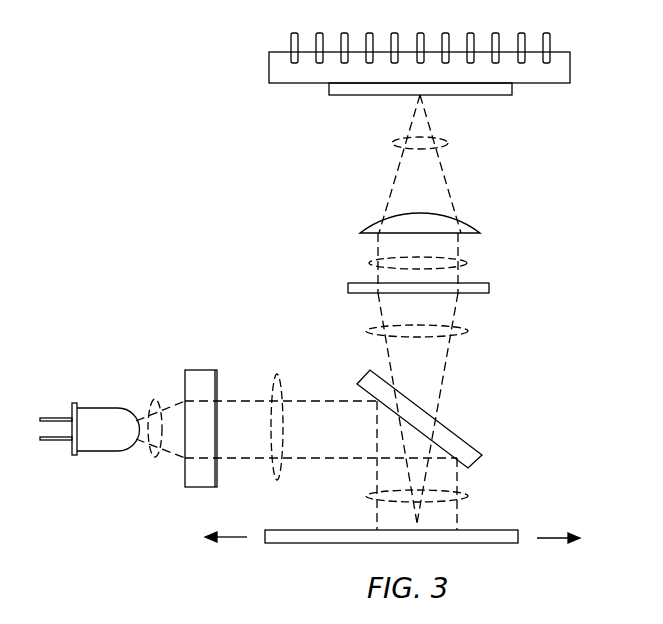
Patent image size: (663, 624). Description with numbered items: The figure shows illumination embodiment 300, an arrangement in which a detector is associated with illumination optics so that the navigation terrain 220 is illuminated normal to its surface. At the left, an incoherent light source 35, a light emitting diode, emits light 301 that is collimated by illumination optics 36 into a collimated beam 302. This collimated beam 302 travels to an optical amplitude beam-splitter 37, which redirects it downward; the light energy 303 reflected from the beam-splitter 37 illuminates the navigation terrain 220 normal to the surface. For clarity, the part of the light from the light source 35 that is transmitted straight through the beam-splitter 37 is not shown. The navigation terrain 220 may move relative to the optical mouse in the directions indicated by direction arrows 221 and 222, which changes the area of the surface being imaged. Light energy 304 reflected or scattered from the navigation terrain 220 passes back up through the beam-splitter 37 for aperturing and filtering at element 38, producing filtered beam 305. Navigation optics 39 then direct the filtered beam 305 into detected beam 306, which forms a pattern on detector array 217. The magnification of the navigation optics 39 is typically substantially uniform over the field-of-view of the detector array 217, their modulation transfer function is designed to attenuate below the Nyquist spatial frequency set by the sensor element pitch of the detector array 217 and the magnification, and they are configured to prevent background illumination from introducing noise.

The illumination embodiment 300 is at (132, 198).
The detector array 217 is at (269, 64).
The detected beam 306 is at (392, 143).
The navigation optics 39 is at (465, 226).
The filtered beam 305 is at (370, 263).
The aperturing and filtering element 38 is at (489, 288).
The light energy reflected or scattered from navigation terrain 304 is at (468, 331).
The optical amplitude beam-splitter 37 is at (458, 433).
The light energy reflected from beam-splitter 303 is at (468, 496).
The navigation terrain 220 is at (324, 530).
The direction arrow 221 is at (232, 539).
The direction arrow 222 is at (547, 541).
The incoherent light source (LED) 35 is at (104, 408).
The light from LED source 301 is at (155, 458).
The illumination optics 36 is at (200, 370).
The collimated beam 302 is at (278, 376).